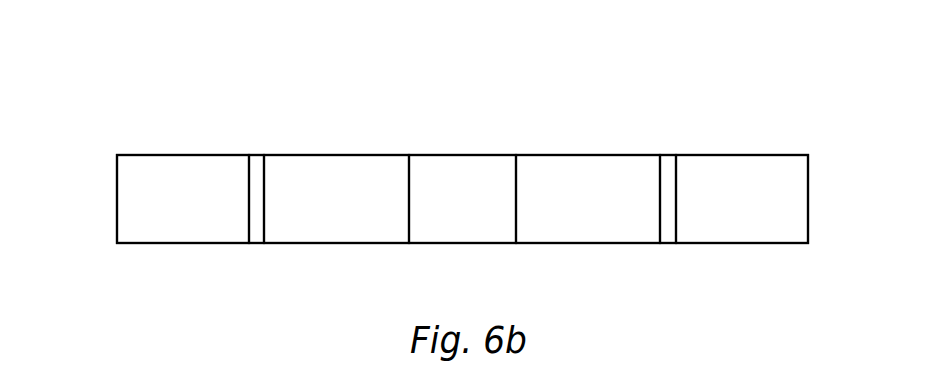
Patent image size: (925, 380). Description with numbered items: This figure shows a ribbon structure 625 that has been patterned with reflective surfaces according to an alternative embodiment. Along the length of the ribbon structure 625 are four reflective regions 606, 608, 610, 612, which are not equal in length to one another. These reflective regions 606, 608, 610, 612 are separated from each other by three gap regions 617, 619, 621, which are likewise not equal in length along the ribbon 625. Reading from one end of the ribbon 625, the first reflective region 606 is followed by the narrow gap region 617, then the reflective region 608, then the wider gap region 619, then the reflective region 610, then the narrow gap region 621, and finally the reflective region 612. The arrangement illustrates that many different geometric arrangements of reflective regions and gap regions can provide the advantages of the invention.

The ribbon structure 625 is at (136, 84).
The reflective region 606 is at (116, 148).
The reflective region 608 is at (264, 148).
The reflective region 610 is at (517, 148).
The reflective region 612 is at (677, 148).
The gap region 617 is at (248, 257).
The gap region 619 is at (409, 255).
The gap region 621 is at (660, 257).